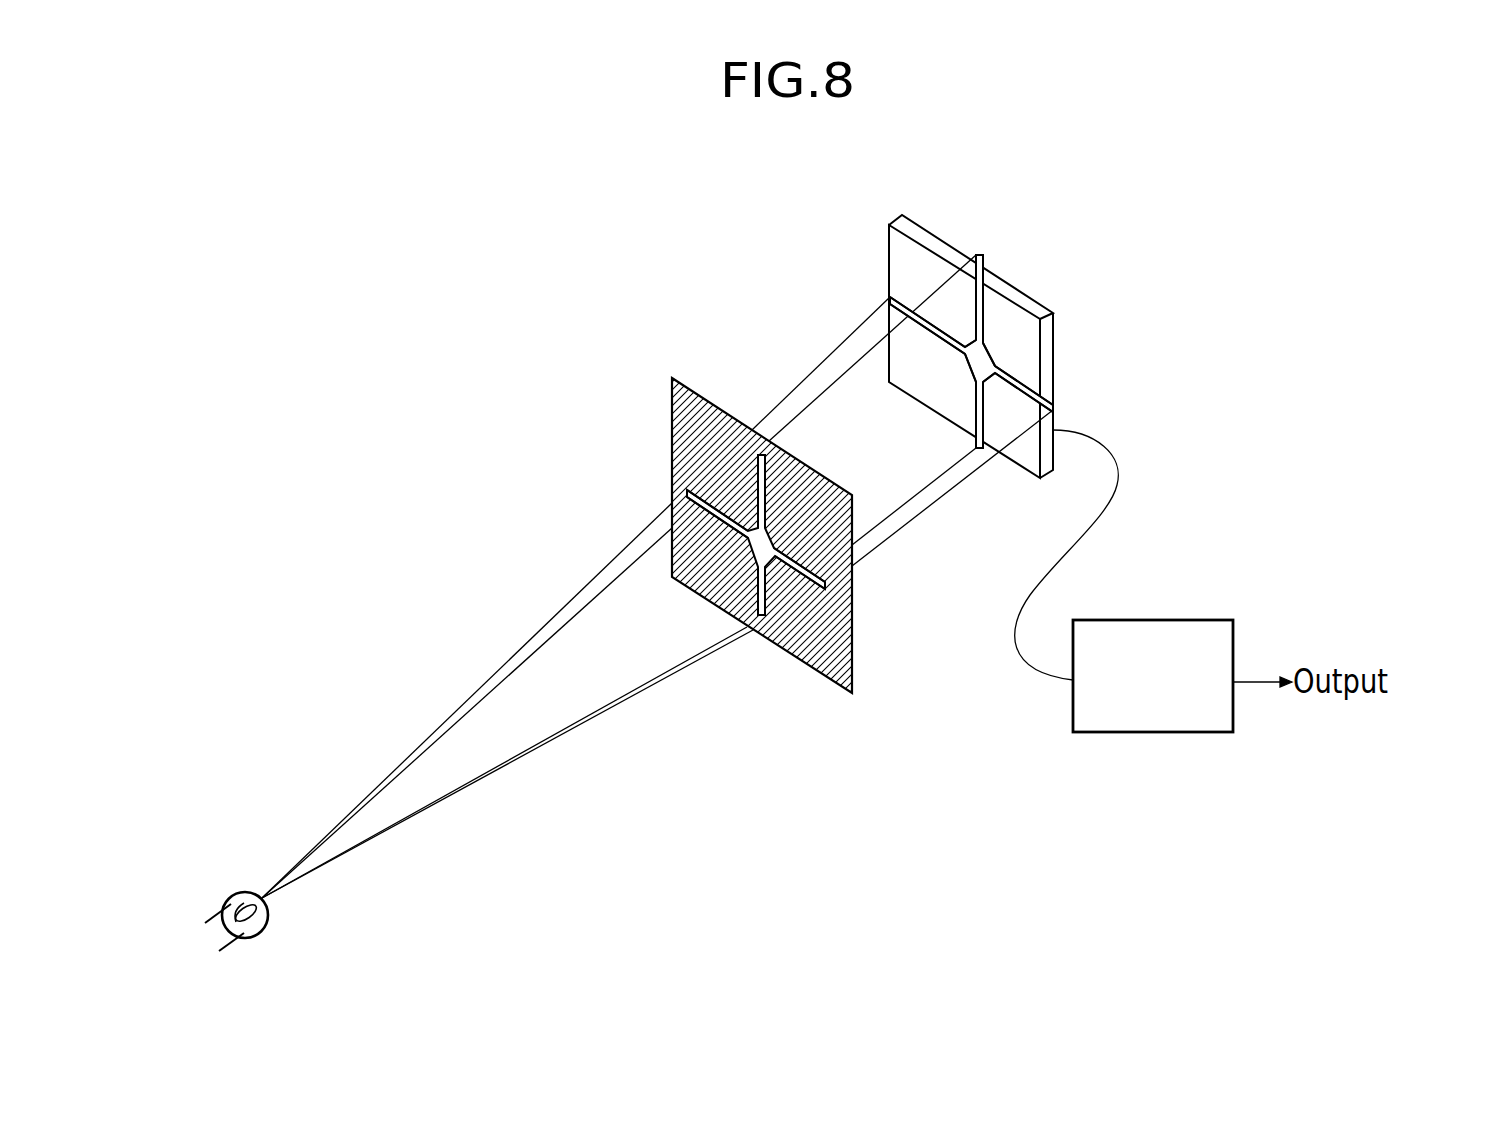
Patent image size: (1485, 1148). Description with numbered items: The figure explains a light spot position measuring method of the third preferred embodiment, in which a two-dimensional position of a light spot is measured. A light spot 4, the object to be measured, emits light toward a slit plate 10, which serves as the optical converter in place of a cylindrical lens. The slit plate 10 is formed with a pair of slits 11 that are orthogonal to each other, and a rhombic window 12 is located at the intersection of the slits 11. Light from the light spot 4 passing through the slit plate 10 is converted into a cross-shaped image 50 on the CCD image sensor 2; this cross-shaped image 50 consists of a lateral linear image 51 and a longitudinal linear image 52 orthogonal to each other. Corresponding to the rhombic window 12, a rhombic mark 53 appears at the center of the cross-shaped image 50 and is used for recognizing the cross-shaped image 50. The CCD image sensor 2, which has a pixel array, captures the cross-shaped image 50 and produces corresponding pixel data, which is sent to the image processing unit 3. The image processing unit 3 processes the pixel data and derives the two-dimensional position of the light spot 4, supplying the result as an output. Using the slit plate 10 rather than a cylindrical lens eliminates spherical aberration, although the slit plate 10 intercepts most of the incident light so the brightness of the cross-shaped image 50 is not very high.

The CCD image sensor 2 is at (888, 245).
The image processing unit 3 is at (1160, 732).
The light spot 4 is at (230, 895).
The slit plate 10 is at (672, 445).
The slits 11 is at (738, 607).
The rhombic window 12 is at (690, 578).
The cross-shaped image 50 is at (1002, 353).
The lateral linear image 51 is at (1027, 385).
The longitudinal linear image 52 is at (984, 270).
The rhombic mark 53 is at (970, 360).